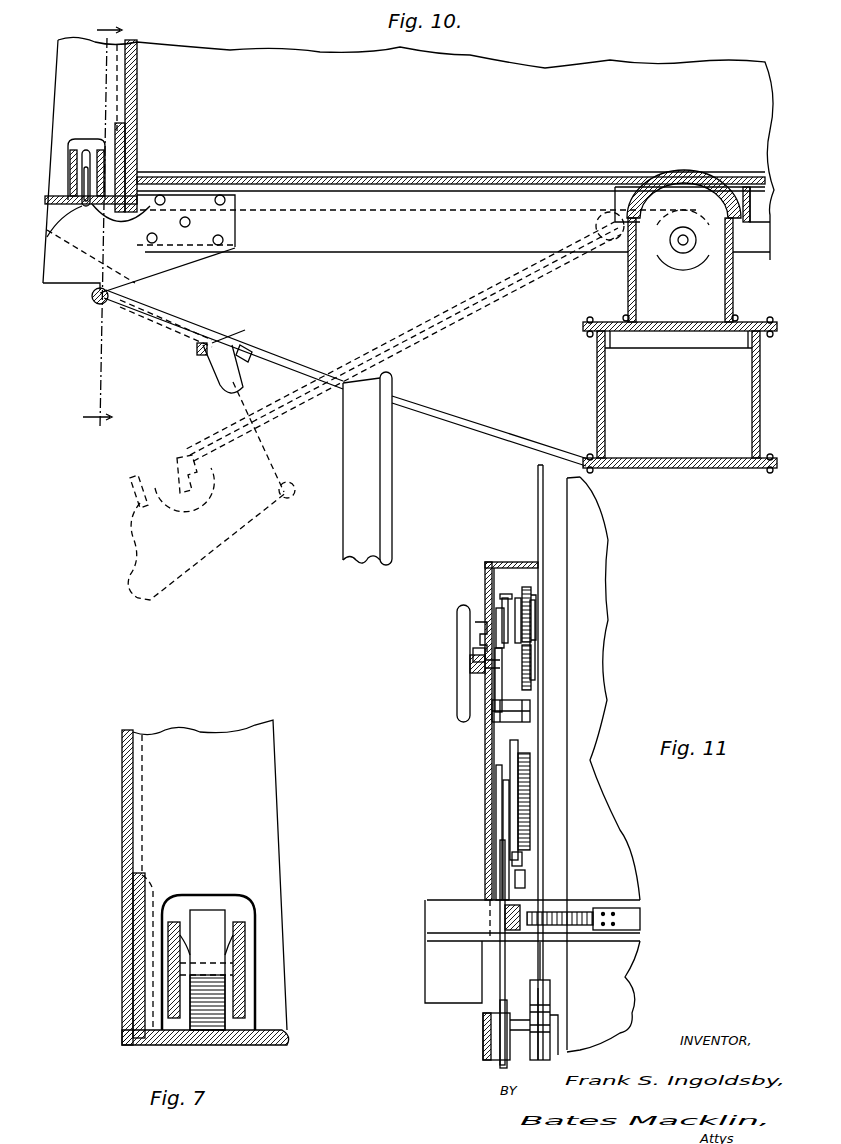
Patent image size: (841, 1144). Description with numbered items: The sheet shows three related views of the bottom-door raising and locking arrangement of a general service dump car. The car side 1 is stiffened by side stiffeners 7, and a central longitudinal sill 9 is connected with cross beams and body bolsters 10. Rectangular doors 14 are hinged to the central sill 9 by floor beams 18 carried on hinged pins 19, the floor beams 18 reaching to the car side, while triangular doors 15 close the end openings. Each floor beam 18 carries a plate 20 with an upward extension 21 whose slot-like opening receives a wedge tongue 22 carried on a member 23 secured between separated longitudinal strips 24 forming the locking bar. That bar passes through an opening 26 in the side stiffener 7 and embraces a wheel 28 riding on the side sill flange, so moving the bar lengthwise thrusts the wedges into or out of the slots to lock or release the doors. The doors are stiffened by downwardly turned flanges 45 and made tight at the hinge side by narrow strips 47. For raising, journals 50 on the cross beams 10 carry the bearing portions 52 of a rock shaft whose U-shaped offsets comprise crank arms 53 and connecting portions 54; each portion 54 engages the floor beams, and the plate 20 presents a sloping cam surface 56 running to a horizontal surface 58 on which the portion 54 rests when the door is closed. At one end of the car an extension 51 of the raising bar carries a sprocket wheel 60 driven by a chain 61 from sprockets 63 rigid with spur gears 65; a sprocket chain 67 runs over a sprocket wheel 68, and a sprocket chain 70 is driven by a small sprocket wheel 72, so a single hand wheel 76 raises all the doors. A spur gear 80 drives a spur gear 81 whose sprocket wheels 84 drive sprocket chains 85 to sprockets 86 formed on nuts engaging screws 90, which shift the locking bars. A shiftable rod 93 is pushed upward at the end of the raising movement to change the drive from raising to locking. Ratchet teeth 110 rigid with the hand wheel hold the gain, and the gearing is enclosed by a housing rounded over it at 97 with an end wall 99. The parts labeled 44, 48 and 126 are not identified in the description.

In FIG. 11, the side 1 is at (600, 573).
In FIG. 10, the side stiffeners 7 is at (90, 161).
In FIG. 11, the side stiffeners 7 is at (553, 651).
In FIG. 7, the side stiffeners 7 is at (204, 882).
In FIG. 10, the central longitudinal sill 9 is at (735, 280).
In FIG. 10, the cross beams and body bolsters 10 is at (367, 428).
In FIG. 10, the rectangular doors 14 is at (453, 177).
In FIG. 7, the triangular doors 15 is at (272, 1040).
In FIG. 10, the floor beams 18 is at (425, 252).
In FIG. 10, the hinged pins 19 is at (683, 252).
In FIG. 10, the plates 20 is at (167, 415).
In FIG. 10, the upward extensions 21 is at (80, 205).
In FIG. 10, the wedge tongues 22 is at (72, 192).
In FIG. 10, the members 23 is at (86, 148).
In FIG. 7, the longitudinal strips 24 is at (247, 935).
In FIG. 7, the openings 26 is at (215, 896).
In FIG. 7, the wheels 28 is at (206, 970).
In FIG. 10, the bell 44 is at (118, 212).
In FIG. 10, the downwardly turned flanges 45 is at (615, 252).
In FIG. 10, the narrow strips 47 is at (606, 187).
In FIG. 10, the dome 48 is at (690, 180).
In FIG. 10, the journals 50 is at (246, 352).
In FIG. 11, the extension 51 is at (500, 1055).
In FIG. 10, the bearing portions 52 is at (222, 388).
In FIG. 10, the crank arms 53 is at (176, 352).
In FIG. 11, the crank arms 53 is at (558, 1038).
In FIG. 10, the connecting portions 54 is at (93, 302).
In FIG. 10, the cam surface 56 is at (182, 264).
In FIG. 10, the horizontal surface 58 is at (62, 283).
In FIG. 11, the sprocket wheel 60 is at (490, 1030).
In FIG. 11, the chain 61 is at (503, 853).
In FIG. 11, the sprocket wheels 63 is at (505, 800).
In FIG. 11, the spur gears 65 is at (525, 771).
In FIG. 11, the sprocket chain 67 is at (510, 755).
In FIG. 11, the sprocket wheel 68 is at (515, 714).
In FIG. 11, the sprocket chain 70 is at (498, 708).
In FIG. 11, the small sprocket wheel 72 is at (506, 598).
In FIG. 11, the hand wheel 76 is at (462, 672).
In FIG. 11, the spur gear 80 is at (533, 681).
In FIG. 11, the spur gear 81 is at (533, 607).
In FIG. 11, the sprocket wheels 84 is at (508, 596).
In FIG. 11, the sprocket chains 85 is at (506, 620).
In FIG. 11, the sprockets 86 is at (505, 915).
In FIG. 11, the screws 90 is at (580, 908).
In FIG. 11, the shiftable rod 93 is at (522, 860).
In FIG. 11, the rounded housing wall 97 is at (510, 562).
In FIG. 11, the end wall 99 is at (496, 773).
In FIG. 11, the ratchet teeth 110 is at (475, 660).
In FIG. 11, the catch 126 is at (480, 642).